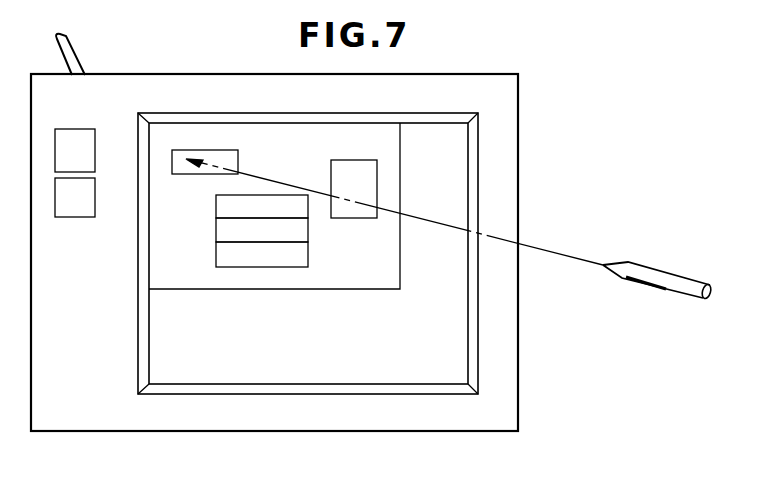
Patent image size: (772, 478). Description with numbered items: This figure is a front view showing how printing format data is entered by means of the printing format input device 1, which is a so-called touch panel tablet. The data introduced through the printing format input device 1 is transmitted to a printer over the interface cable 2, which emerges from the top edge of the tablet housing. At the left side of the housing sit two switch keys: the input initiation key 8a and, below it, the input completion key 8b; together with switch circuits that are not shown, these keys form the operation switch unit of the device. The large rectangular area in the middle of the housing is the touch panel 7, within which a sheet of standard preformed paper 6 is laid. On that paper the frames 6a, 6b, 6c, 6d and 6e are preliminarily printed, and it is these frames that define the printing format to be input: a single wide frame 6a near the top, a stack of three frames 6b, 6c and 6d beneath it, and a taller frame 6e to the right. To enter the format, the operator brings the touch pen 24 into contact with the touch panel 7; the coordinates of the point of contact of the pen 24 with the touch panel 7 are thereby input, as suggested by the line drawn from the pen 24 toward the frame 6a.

The display device housing 1 is at (247, 74).
The antenna / tab 2 is at (84, 58).
The display screen area 6 is at (302, 290).
The display field 6a is at (240, 160).
The display field 6b is at (308, 210).
The display field 6c is at (308, 234).
The display field 6d is at (308, 262).
The display field 6e is at (355, 160).
The display frame 7 is at (460, 368).
The key / button 8a is at (96, 150).
The key / button 8b is at (96, 194).
The light pen 24 is at (664, 289).